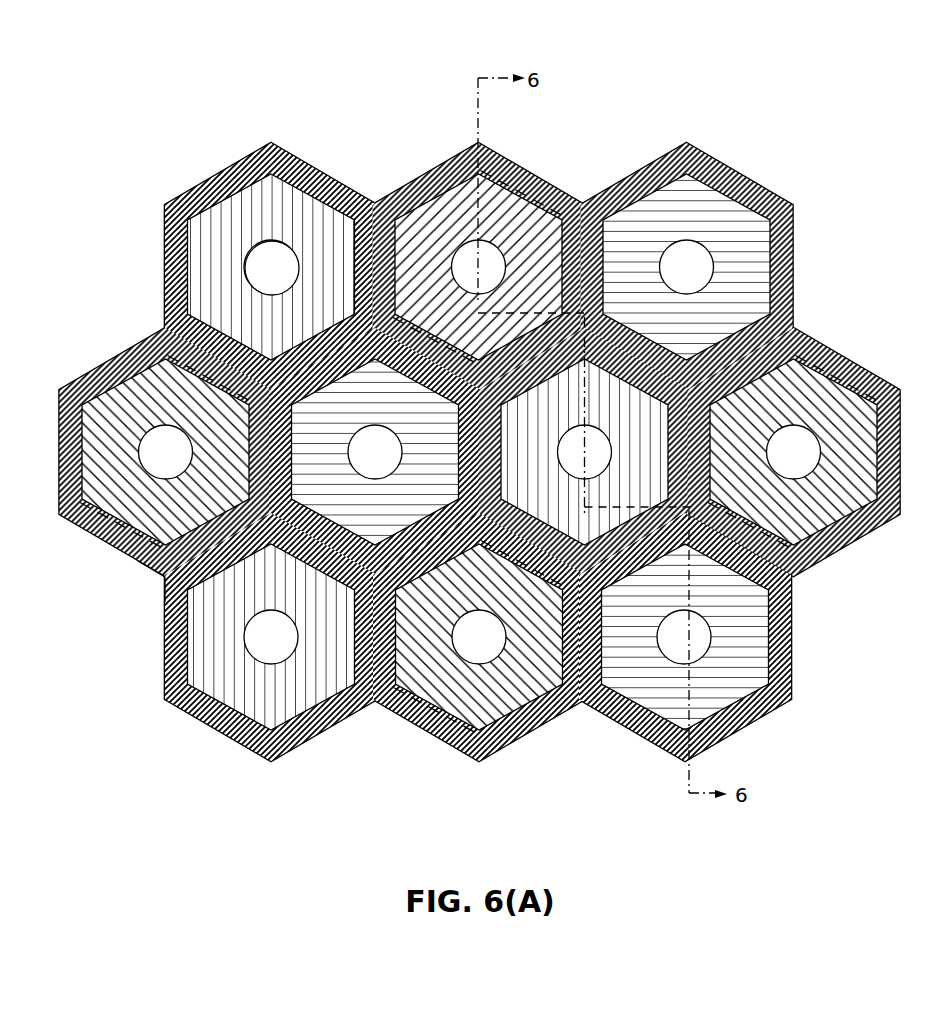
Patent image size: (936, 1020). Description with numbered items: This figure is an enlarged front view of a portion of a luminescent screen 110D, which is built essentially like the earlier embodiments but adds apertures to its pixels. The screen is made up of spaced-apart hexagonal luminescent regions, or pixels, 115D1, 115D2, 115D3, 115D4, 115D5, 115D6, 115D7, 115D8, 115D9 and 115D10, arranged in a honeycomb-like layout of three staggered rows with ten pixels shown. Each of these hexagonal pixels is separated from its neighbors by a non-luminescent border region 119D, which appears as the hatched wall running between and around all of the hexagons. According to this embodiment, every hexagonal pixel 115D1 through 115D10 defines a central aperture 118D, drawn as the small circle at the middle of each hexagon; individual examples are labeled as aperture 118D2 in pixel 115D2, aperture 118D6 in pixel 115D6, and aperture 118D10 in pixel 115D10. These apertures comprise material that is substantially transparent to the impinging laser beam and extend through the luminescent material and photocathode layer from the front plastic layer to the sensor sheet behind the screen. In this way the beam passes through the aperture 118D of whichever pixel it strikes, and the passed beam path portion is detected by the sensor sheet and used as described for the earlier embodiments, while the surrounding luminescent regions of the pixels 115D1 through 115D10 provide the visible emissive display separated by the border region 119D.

The luminescent screen 110D is at (229, 92).
The hexagonal pixel 115D1 is at (271, 267).
The hexagonal pixel 115D2 is at (491, 197).
The hexagonal pixel 115D3 is at (686, 267).
The hexagonal pixel 115D4 is at (165, 452).
The hexagonal pixel 115D5 is at (375, 452).
The hexagonal pixel 115D6 is at (565, 515).
The hexagonal pixel 115D7 is at (793, 452).
The hexagonal pixel 115D8 is at (271, 637).
The hexagonal pixel 115D9 is at (479, 637).
The hexagonal pixel 115D10 is at (753, 663).
The central aperture 118D is at (266, 278).
The aperture 118D2 is at (449, 242).
The aperture 118D6 is at (603, 448).
The aperture 118D10 is at (703, 650).
The non-luminescent border region 119D is at (163, 580).